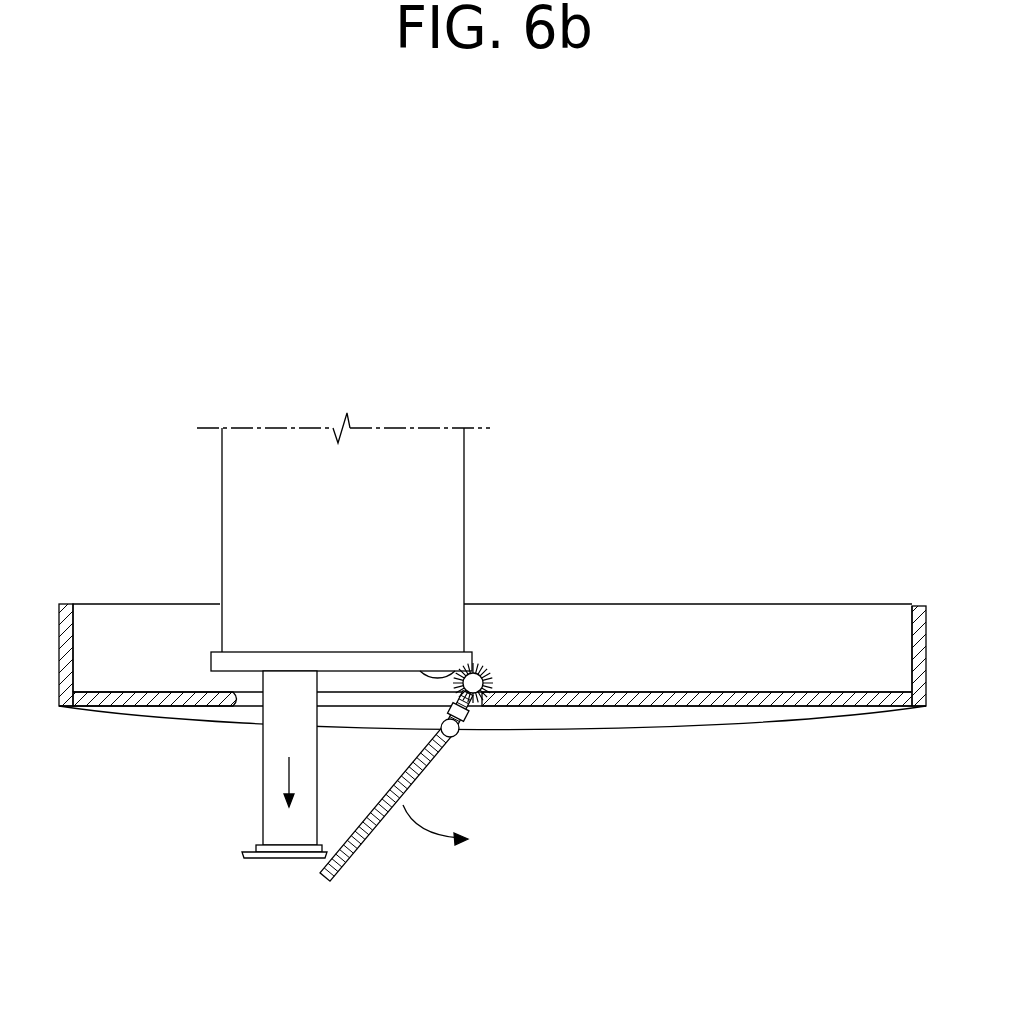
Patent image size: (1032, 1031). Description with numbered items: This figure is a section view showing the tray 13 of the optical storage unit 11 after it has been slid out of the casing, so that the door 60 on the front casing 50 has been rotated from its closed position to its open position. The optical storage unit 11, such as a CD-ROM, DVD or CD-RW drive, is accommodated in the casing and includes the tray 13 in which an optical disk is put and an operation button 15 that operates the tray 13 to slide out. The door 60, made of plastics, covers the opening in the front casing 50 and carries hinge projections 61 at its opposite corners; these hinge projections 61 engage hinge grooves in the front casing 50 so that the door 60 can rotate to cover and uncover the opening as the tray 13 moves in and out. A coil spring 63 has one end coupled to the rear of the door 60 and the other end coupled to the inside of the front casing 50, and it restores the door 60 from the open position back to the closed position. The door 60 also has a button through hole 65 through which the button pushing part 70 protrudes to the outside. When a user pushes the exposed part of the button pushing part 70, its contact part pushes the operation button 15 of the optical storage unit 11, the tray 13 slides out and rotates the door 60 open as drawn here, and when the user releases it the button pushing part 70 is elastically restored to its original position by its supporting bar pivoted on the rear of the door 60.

The optical storage unit 11 is at (457, 483).
The tray 13 is at (283, 860).
The operation button 15 is at (436, 671).
The front casing 50 is at (677, 703).
The door 60 is at (330, 880).
The hinge projections 61 is at (478, 708).
The coil spring 63 is at (492, 675).
The button through hole 65 is at (407, 742).
The button pushing part 70 is at (415, 720).